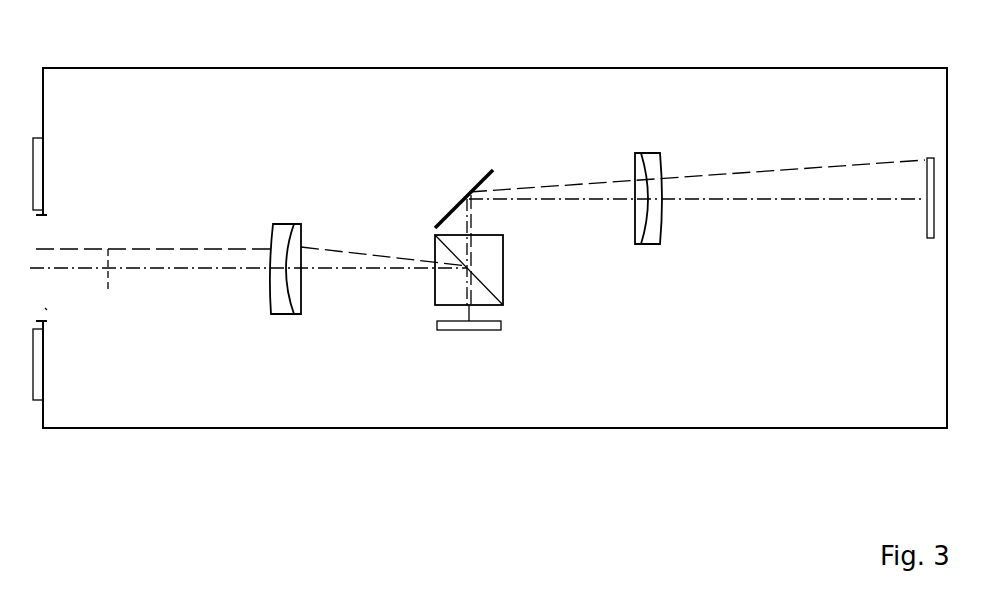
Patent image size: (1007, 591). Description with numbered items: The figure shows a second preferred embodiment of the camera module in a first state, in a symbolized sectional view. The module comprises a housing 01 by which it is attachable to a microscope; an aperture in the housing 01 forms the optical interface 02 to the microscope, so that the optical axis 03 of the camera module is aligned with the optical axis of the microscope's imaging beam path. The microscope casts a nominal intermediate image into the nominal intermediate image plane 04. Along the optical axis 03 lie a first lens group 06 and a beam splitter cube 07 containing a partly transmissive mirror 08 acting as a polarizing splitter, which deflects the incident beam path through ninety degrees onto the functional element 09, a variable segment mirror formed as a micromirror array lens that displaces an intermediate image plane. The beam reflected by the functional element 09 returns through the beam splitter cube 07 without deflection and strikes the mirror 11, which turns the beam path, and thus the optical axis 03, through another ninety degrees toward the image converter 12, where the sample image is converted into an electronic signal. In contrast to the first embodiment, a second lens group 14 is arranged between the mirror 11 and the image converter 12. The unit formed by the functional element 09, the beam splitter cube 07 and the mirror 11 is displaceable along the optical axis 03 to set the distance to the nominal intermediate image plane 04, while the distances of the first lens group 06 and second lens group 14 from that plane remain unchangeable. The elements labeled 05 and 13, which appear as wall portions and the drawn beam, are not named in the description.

The housing 01 is at (110, 428).
The optical interface 02 is at (45, 308).
The optical axis 03 is at (320, 272).
The nominal intermediate image plane 04 is at (108, 293).
The housing wall elements 05 is at (33, 138).
The first lens group 06 is at (287, 315).
The beam splitter cube 07 is at (435, 305).
The partly transmissive mirror 08 is at (500, 301).
The functional element 09 is at (469, 330).
The mirror 11 is at (483, 181).
The image converter 12 is at (927, 230).
The light beam 13 is at (180, 249).
The second lens group 14 is at (660, 235).